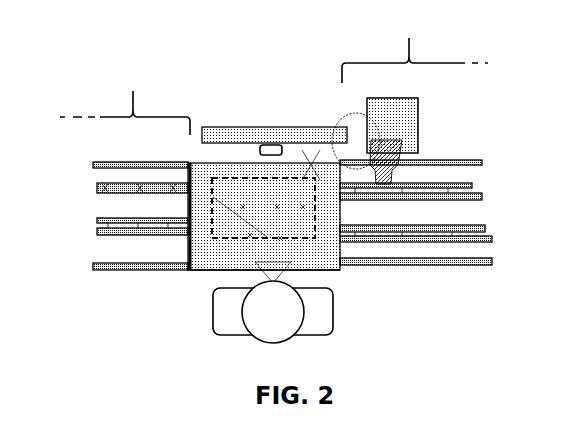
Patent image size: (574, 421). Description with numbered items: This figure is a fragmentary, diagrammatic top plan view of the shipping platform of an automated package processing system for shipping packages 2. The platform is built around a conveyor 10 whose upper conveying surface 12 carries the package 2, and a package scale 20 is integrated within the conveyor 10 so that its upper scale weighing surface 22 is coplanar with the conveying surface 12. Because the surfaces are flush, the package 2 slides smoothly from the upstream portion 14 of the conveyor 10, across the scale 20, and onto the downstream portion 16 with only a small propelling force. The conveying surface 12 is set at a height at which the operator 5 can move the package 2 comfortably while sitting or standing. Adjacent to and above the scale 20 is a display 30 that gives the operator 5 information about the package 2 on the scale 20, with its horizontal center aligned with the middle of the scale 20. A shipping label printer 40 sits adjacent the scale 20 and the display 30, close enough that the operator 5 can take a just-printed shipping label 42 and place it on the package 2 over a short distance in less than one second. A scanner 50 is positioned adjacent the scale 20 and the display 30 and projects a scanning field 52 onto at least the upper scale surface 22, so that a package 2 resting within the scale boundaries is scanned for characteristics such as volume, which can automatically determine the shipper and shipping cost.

The package 2 is at (213, 224).
The operator 5 is at (282, 322).
The conveyor 10 is at (118, 268).
The upper conveying surface 12 is at (163, 258).
The upstream portion 14 is at (125, 101).
The downstream portion 16 is at (415, 48).
The package scale 20 is at (218, 260).
The upper scale weighing surface 22 is at (332, 257).
The display 30 is at (245, 127).
The shipping label printer 40 is at (419, 130).
The printed shipping label 42 is at (382, 178).
The scanner 50 is at (343, 157).
The projected scanning field 52 is at (321, 208).